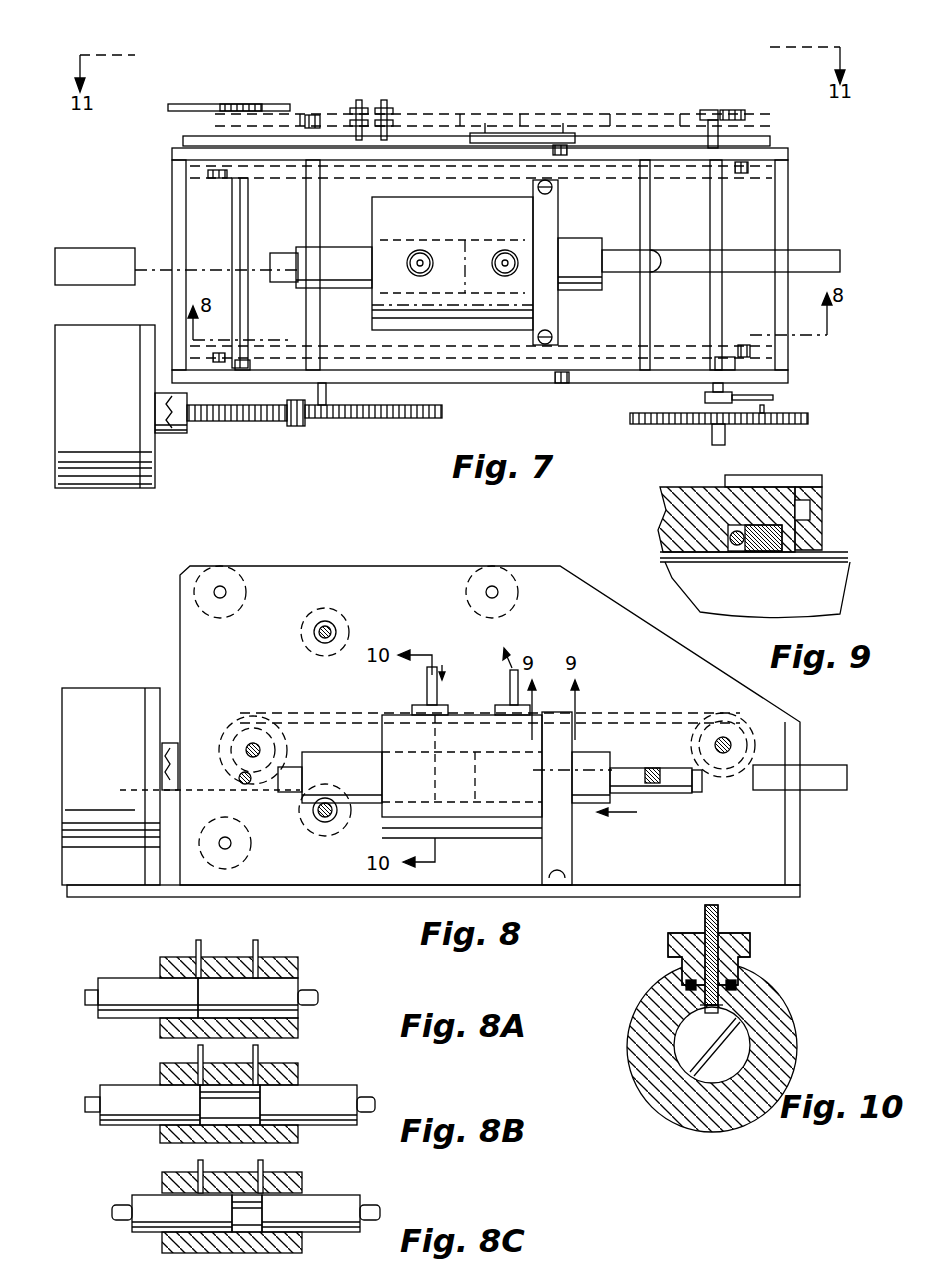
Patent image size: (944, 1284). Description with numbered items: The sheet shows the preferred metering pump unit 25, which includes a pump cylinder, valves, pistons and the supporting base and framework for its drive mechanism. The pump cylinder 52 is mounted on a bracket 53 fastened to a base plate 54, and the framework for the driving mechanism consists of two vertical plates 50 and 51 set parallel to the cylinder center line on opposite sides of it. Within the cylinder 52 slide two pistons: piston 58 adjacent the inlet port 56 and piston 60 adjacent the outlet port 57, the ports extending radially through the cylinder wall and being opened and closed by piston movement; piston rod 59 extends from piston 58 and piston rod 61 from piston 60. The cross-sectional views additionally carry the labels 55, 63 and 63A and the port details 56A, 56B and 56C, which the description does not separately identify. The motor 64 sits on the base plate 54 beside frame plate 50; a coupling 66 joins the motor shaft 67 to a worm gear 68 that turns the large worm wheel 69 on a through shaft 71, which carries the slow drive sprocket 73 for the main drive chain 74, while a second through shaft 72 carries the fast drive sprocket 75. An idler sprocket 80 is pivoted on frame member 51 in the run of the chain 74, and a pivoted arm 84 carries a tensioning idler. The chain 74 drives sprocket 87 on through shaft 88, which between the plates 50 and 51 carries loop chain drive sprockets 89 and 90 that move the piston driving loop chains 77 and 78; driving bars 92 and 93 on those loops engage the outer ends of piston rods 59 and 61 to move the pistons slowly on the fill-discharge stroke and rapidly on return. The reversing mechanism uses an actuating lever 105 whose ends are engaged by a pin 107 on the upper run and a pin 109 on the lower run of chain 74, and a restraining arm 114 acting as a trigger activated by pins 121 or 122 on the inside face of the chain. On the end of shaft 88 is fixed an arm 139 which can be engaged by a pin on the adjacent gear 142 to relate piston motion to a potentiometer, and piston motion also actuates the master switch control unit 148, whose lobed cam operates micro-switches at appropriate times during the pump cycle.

In FIG. 7, the metering pump unit 25 is at (131, 219).
In FIG. 7, the vertical frame plate 50 is at (572, 384).
In FIG. 7, the vertical frame plate 51 is at (762, 147).
In FIG. 8, the vertical frame plate 51 is at (598, 612).
In FIG. 7, the pump cylinder 52 is at (464, 222).
In FIG. 9, the pump cylinder 52 is at (676, 488).
In FIG. 8, the pump cylinder 52 is at (510, 840).
In FIG. 10, the pump cylinder 52 is at (797, 1050).
In FIG. 7, the bracket 53 is at (553, 187).
In FIG. 9, the bracket 53 is at (795, 476).
In FIG. 8, the bracket 53 is at (572, 872).
In FIG. 8, the base plate 54 is at (645, 885).
In FIG. 10, the seal 55 is at (688, 985).
In FIG. 7, the inlet port 56 is at (418, 250).
In FIG. 8, the inlet port 56 is at (412, 710).
In FIG. 10, the inlet port 56 is at (725, 1000).
In FIG. 10, the port 56A is at (700, 1020).
In FIG. 10, the port 56B is at (680, 1030).
In FIG. 10, the fitting 56C is at (740, 952).
In FIG. 7, the outlet port 57 is at (503, 250).
In FIG. 8, the outlet port 57 is at (497, 710).
In FIG. 7, the piston 58 is at (345, 247).
In FIG. 8, the piston 58 is at (350, 752).
In FIG. 8A, the piston 58 is at (150, 985).
In FIG. 8B, the piston 58 is at (148, 1092).
In FIG. 8C, the piston 58 is at (148, 1202).
In FIG. 10, the piston 58 is at (735, 1040).
In FIG. 7, the piston rod 59 is at (282, 253).
In FIG. 8, the piston rod 59 is at (295, 767).
In FIG. 7, the piston 60 is at (568, 238).
In FIG. 9, the piston 60 is at (822, 518).
In FIG. 8, the piston 60 is at (585, 752).
In FIG. 8A, the piston 60 is at (285, 982).
In FIG. 8B, the piston 60 is at (298, 1092).
In FIG. 8C, the piston 60 is at (302, 1202).
In FIG. 7, the piston rod 61 is at (614, 252).
In FIG. 8, the piston rod 61 is at (622, 768).
In FIG. 9, the seal 63 is at (770, 552).
In FIG. 9, the O-ring 63A is at (732, 545).
In FIG. 7, the motor 64 is at (92, 317).
In FIG. 8, the motor 64 is at (132, 688).
In FIG. 7, the coupling 66 is at (170, 433).
In FIG. 7, the motor shaft 67 is at (225, 421).
In FIG. 7, the worm gear 68 is at (295, 426).
In FIG. 7, the large worm wheel 69 is at (415, 418).
In FIG. 7, the through shaft 71 is at (306, 326).
In FIG. 8, the through shaft 71 is at (312, 636).
In FIG. 8, the through shaft 72 is at (313, 816).
In FIG. 7, the slow drive sprocket 73 is at (300, 114).
In FIG. 8, the slow drive sprocket 73 is at (342, 627).
In FIG. 7, the main drive chain 74 is at (615, 116).
In FIG. 8, the fast drive sprocket 75 is at (330, 848).
In FIG. 7, the chain loop 77 is at (668, 178).
In FIG. 8, the chain loop 77 is at (700, 713).
In FIG. 7, the chain loop 78 is at (690, 346).
In FIG. 7, the idler sprocket 80 is at (485, 114).
In FIG. 8, the idler sprocket 80 is at (470, 596).
In FIG. 7, the pivoted arm 84 is at (522, 133).
In FIG. 7, the piston drive sprocket 87 is at (716, 110).
In FIG. 7, the through shaft 88 is at (722, 230).
In FIG. 8, the through shaft 88 is at (700, 770).
In FIG. 7, the loop chain drive sprocket 89 is at (740, 345).
In FIG. 7, the loop chain drive sprocket 90 is at (740, 172).
In FIG. 8, the loop chain drive sprocket 90 is at (735, 772).
In FIG. 7, the driving bar 92 is at (232, 232).
In FIG. 8, the driving bar 92 is at (245, 772).
In FIG. 7, the driving bar 93 is at (652, 274).
In FIG. 8, the driving bar 93 is at (652, 768).
In FIG. 7, the actuating lever 105 is at (210, 104).
In FIG. 7, the laterally extending pin 107 is at (357, 106).
In FIG. 7, the pin 109 is at (393, 110).
In FIG. 7, the restraining arm 114 is at (183, 141).
In FIG. 7, the pin 121 is at (384, 100).
In FIG. 7, the pin 122 is at (393, 124).
In FIG. 7, the arm 139 is at (705, 398).
In FIG. 7, the gear 142 is at (790, 413).
In FIG. 7, the master switch control unit 148 is at (115, 279).
In FIG. 8, the master switch control unit 148 is at (130, 782).